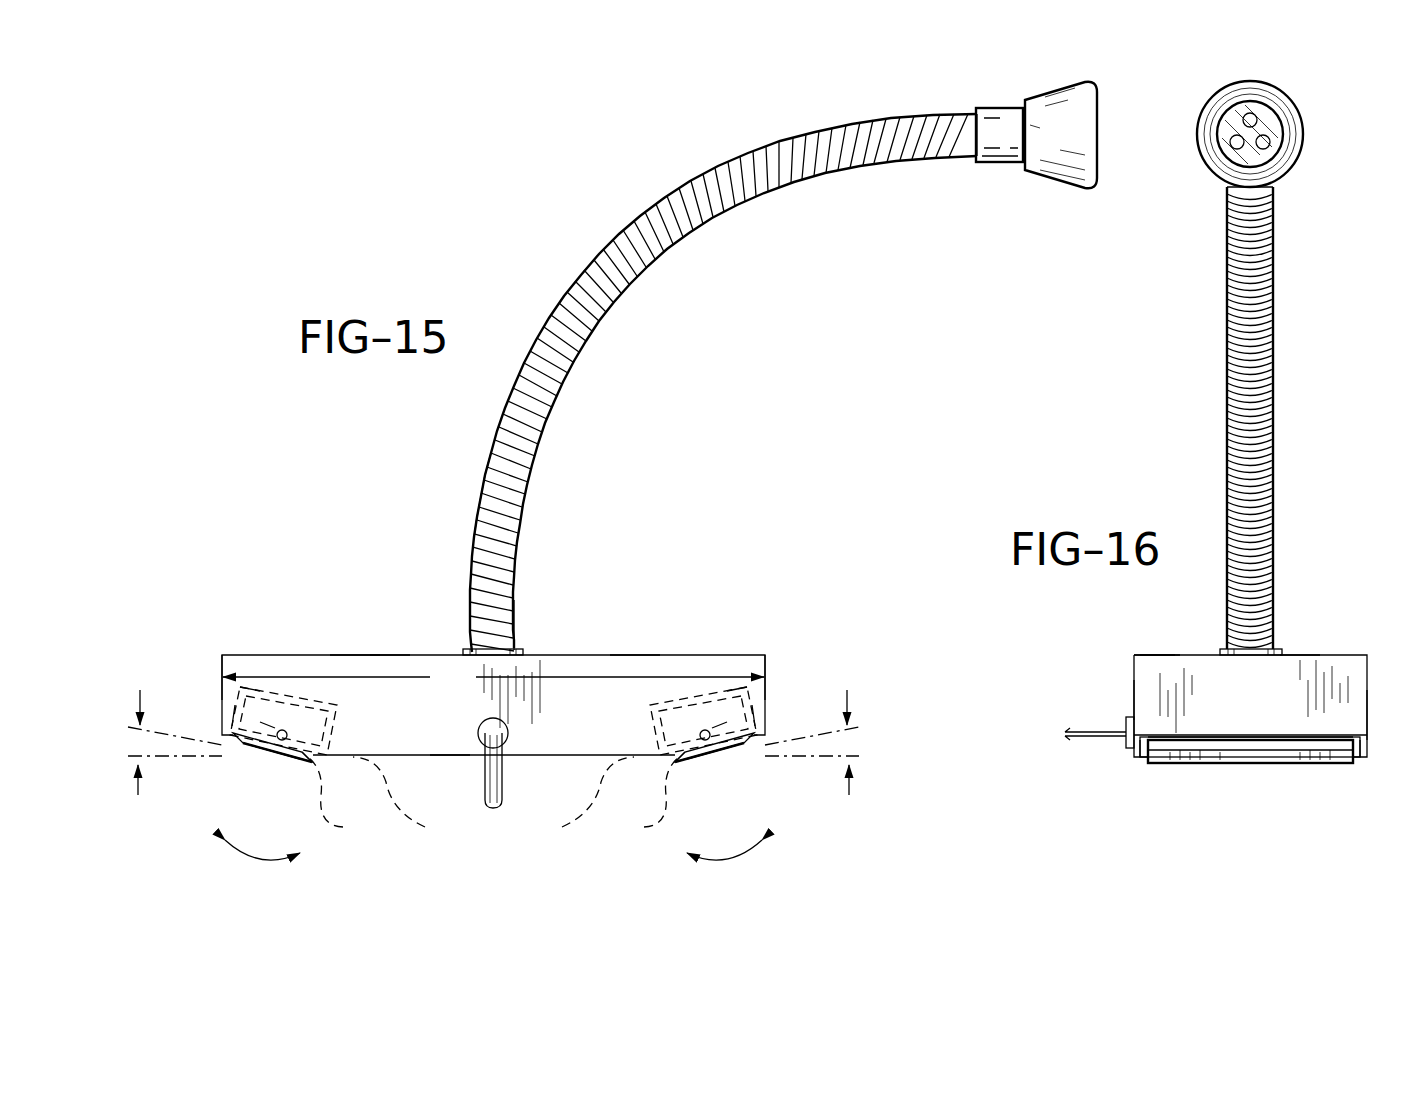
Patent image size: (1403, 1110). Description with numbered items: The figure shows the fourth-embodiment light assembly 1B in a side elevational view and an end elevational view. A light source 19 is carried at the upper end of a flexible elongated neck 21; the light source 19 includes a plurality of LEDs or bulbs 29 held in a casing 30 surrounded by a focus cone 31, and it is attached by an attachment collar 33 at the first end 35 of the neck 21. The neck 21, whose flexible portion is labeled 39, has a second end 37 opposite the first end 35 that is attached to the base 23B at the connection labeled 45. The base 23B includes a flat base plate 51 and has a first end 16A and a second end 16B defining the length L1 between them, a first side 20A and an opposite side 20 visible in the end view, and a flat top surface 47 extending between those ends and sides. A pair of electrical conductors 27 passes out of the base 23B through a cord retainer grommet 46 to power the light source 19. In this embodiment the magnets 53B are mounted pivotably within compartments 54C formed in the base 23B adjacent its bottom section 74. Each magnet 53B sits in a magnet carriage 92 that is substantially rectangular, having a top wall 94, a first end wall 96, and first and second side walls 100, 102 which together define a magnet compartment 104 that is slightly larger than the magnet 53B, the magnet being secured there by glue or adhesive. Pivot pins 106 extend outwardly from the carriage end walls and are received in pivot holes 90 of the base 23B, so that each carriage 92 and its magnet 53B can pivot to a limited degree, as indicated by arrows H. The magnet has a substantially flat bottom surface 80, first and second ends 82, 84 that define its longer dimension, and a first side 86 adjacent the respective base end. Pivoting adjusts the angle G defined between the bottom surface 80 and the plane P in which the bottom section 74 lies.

In FIG. 15, the light assembly 1B is at (414, 466).
In FIG. 16, the light assembly 1B is at (1210, 395).
In FIG. 15, the light source 19 is at (1047, 188).
In FIG. 16, the light source 19 is at (1284, 86).
In FIG. 16, the base housing 20 is at (1368, 707).
In FIG. 15, the first side 20A is at (443, 743).
In FIG. 16, the first side 20A is at (1133, 680).
In FIG. 15, the flexible elongated neck 21 is at (591, 257).
In FIG. 16, the flexible elongated neck 21 is at (1228, 450).
In FIG. 15, the base 23B is at (354, 658).
In FIG. 16, the base 23B is at (1132, 660).
In FIG. 15, the electrical conductors 27 is at (503, 780).
In FIG. 16, the electrical conductors 27 is at (1083, 738).
In FIG. 16, the light emitting diodes or bulbs 29 is at (1233, 122).
In FIG. 16, the casing 30 is at (1273, 118).
In FIG. 15, the focus cone 31 is at (1060, 90).
In FIG. 16, the focus cone 31 is at (1233, 84).
In FIG. 15, the attachment collar 33 is at (988, 108).
In FIG. 15, the first end of neck 35 is at (962, 167).
In FIG. 16, the first end of neck 35 is at (1284, 189).
In FIG. 15, the second end of neck 37 is at (528, 631).
In FIG. 16, the second end of neck 37 is at (1285, 630).
In FIG. 15, the hose flexible segment 39 is at (474, 526).
In FIG. 16, the hose flexible segment 39 is at (1228, 490).
In FIG. 15, the hose mounting collar 45 is at (463, 651).
In FIG. 16, the hose mounting collar 45 is at (1222, 650).
In FIG. 15, the cord retainer grommet 46 is at (508, 727).
In FIG. 16, the cord retainer grommet 46 is at (1123, 745).
In FIG. 15, the flat top surface 47 is at (633, 655).
In FIG. 16, the flat top surface 47 is at (1157, 656).
In FIG. 15, the flat base plate 51 is at (388, 667).
In FIG. 16, the flat base plate 51 is at (1295, 660).
In FIG. 15, the magnets 53B is at (277, 766).
In FIG. 16, the magnets 53B is at (1213, 761).
In FIG. 15, the compartments 54C is at (493, 799).
In FIG. 15, the bottom section 74 is at (451, 757).
In FIG. 15, the bottom surface 80 is at (256, 763).
In FIG. 16, the bottom surface 80 is at (1272, 763).
In FIG. 16, the first end of magnet 82 is at (1142, 762).
In FIG. 16, the second end of magnet 84 is at (1353, 763).
In FIG. 16, the first side of magnet 86 is at (1242, 745).
In FIG. 15, the pivot holes 90 is at (281, 763).
In FIG. 15, the magnet carriage 92 is at (305, 687).
In FIG. 16, the magnet carriage 92 is at (1265, 732).
In FIG. 15, the top wall 94 is at (262, 700).
In FIG. 15, the first end wall 96 is at (240, 692).
In FIG. 15, the first side wall 100 is at (236, 720).
In FIG. 15, the second side wall 102 is at (340, 750).
In FIG. 15, the magnet compartment 104 is at (493, 799).
In FIG. 15, the pivot pins 106 is at (290, 731).
In FIG. 15, the first end of base 16A is at (221, 668).
In FIG. 15, the second end of base 16B is at (766, 668).
In FIG. 16, the second end of base 16B is at (1153, 701).
In FIG. 15, the length of base L1 is at (493, 677).
In FIG. 15, the angle G is at (493, 742).
In FIG. 15, the plane P is at (165, 762).
In FIG. 15, the arrows H is at (255, 860).